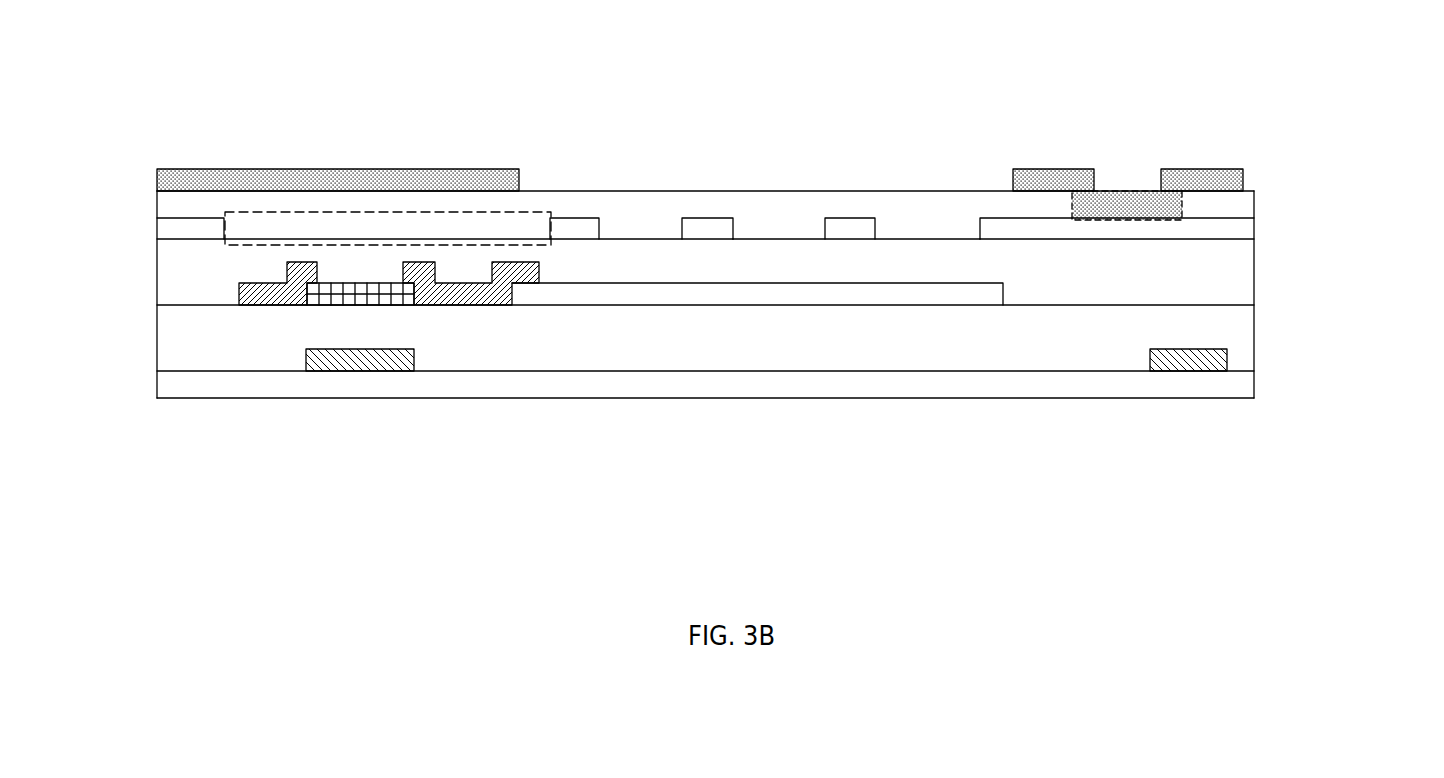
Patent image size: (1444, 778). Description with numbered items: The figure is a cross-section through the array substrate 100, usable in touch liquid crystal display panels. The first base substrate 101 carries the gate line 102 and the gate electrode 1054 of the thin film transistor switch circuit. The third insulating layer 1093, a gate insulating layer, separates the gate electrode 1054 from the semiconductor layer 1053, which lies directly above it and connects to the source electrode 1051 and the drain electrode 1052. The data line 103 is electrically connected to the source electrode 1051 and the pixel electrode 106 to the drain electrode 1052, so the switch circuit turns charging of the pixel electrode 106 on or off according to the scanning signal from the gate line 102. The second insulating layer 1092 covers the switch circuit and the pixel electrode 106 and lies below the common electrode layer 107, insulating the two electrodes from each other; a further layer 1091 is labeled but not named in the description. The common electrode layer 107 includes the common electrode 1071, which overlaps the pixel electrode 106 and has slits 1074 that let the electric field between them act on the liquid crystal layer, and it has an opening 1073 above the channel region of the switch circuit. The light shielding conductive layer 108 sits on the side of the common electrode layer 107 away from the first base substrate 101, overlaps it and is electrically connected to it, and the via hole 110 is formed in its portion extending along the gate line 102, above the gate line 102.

The array substrate 100 is at (1238, 80).
The first base substrate 101 is at (705, 421).
The gate line 102 is at (716, 407).
The gate electrode 1054 is at (716, 407).
The data line 103 is at (221, 207).
The source electrode 1051 is at (221, 207).
The semiconductor layer 1053 is at (333, 207).
The drain electrode 1052 is at (471, 207).
The pixel electrode 106 is at (757, 207).
The common electrode layer 107 is at (661, 174).
The light shielding conductive layer 108 is at (700, 150).
The via hole 110 is at (1100, 161).
The common electrode 1071 is at (811, 174).
The opening 1073 is at (412, 177).
The slit 1074 is at (856, 174).
The first inorganic layer 1091 is at (777, 201).
The second insulating layer 1092 is at (777, 253).
The third insulating layer 1093 is at (777, 314).